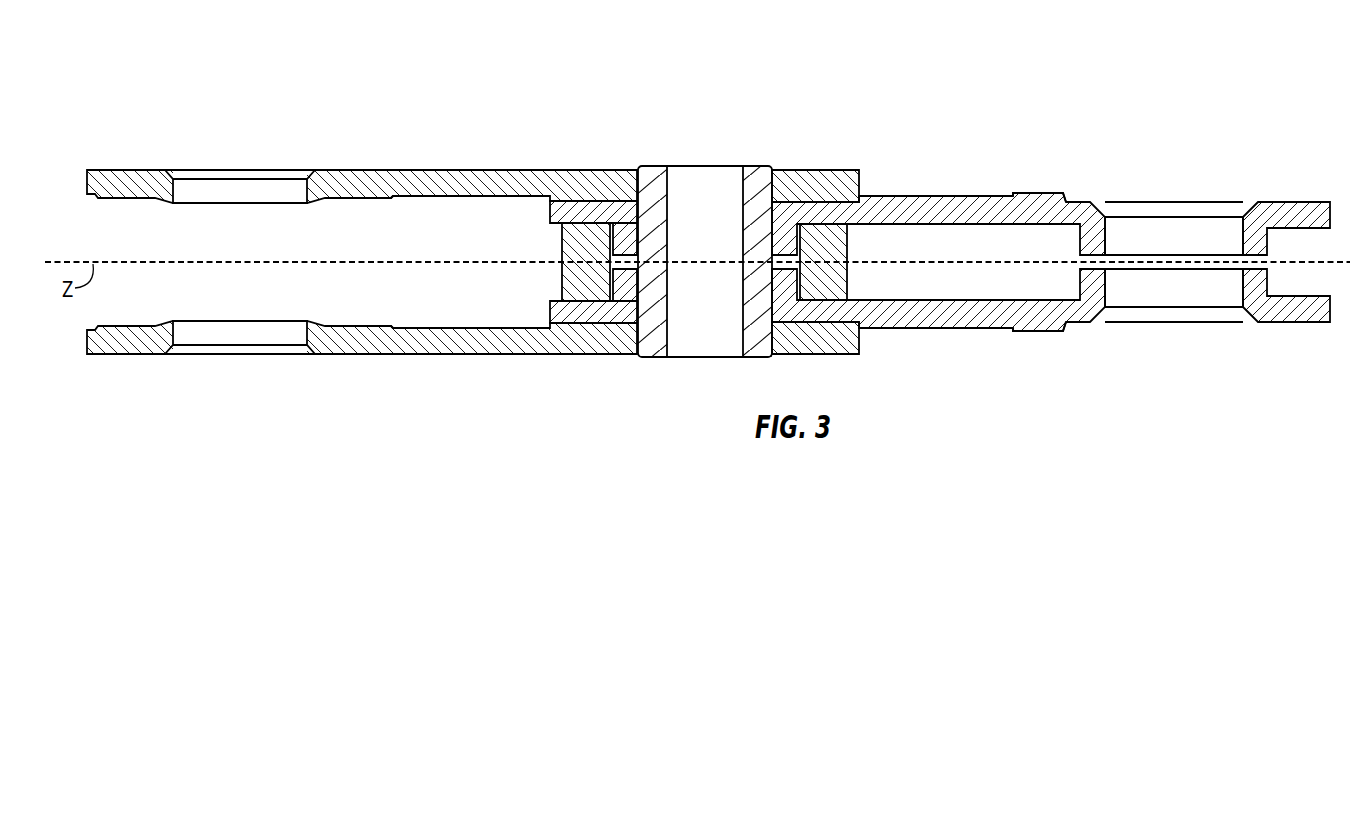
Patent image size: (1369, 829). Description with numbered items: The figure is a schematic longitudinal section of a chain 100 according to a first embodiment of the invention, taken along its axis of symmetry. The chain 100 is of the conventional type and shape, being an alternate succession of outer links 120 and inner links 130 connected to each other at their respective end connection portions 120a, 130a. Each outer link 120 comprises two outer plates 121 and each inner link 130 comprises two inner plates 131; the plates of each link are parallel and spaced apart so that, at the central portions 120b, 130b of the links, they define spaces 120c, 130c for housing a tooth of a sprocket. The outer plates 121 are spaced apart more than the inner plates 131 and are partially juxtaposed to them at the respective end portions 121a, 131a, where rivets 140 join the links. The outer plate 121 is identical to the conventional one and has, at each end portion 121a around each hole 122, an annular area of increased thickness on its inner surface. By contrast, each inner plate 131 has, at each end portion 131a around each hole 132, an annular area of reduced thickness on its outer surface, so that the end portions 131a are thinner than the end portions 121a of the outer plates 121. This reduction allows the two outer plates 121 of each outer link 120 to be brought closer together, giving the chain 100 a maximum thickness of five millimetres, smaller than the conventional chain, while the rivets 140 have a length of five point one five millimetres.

The chain 100 is at (707, 249).
The outer link 120 is at (473, 250).
The end connection portion of outer link 120a is at (704, 182).
The central portion of outer link 120b is at (362, 128).
The space for housing a tooth 120c is at (362, 373).
The outer plate 121 is at (370, 264).
The end portion of outer plate 121a is at (815, 207).
The hole 122 is at (240, 206).
The inner link 130 is at (940, 232).
The end connection portion of inner link 130a is at (679, 182).
The central portion of inner link 130b is at (1051, 173).
The space for housing a tooth 130c is at (1051, 333).
The inner plate 131 is at (1010, 264).
The end portion of inner plate 131a is at (593, 207).
The hole 132 is at (1174, 207).
The rivet 140 is at (705, 291).